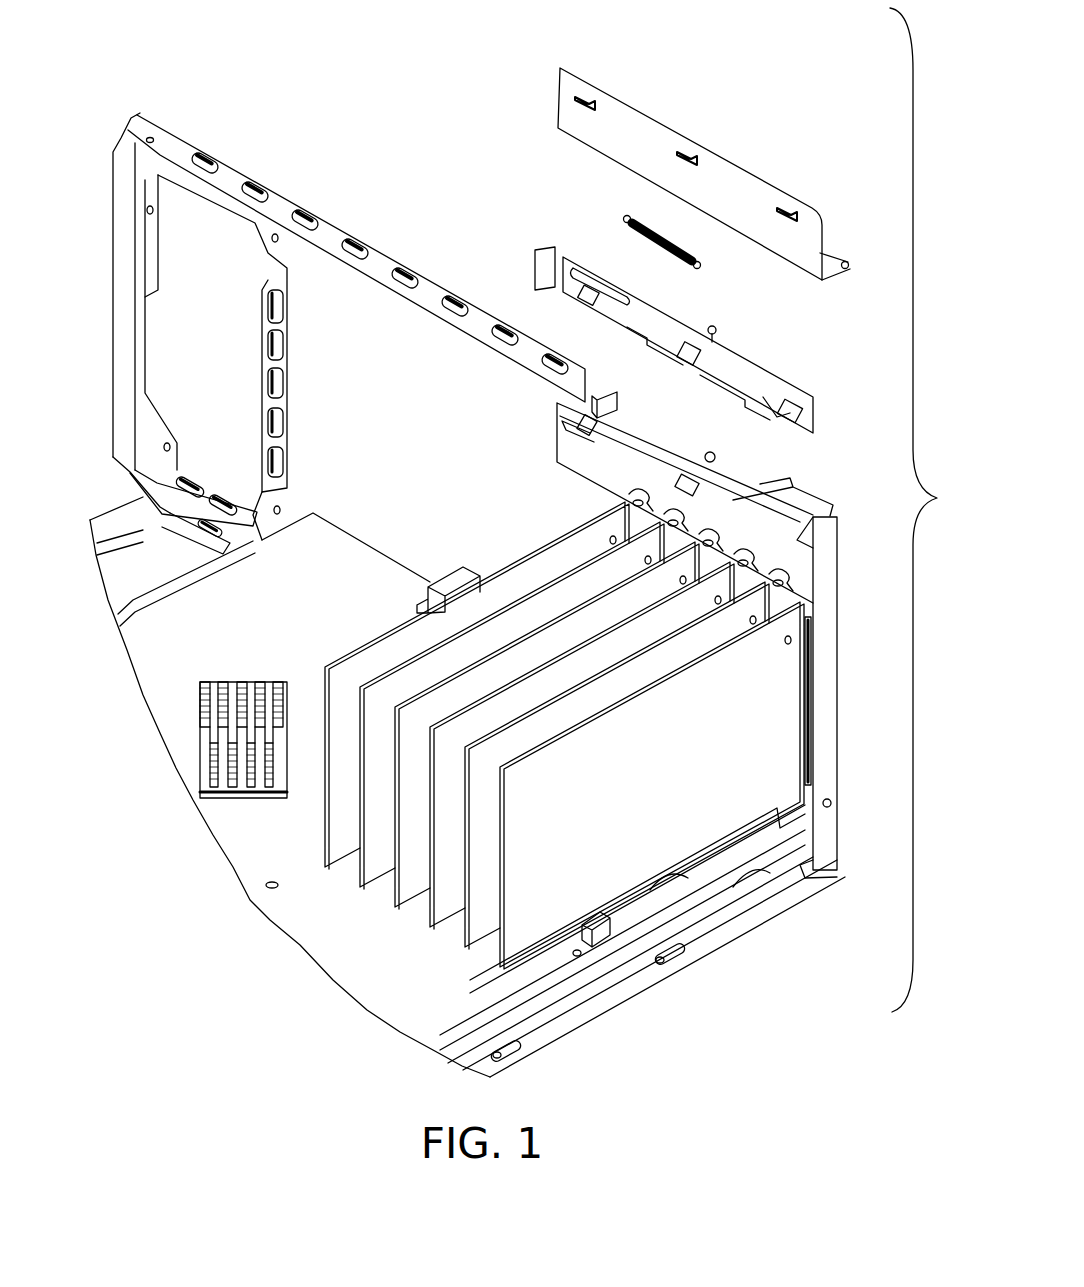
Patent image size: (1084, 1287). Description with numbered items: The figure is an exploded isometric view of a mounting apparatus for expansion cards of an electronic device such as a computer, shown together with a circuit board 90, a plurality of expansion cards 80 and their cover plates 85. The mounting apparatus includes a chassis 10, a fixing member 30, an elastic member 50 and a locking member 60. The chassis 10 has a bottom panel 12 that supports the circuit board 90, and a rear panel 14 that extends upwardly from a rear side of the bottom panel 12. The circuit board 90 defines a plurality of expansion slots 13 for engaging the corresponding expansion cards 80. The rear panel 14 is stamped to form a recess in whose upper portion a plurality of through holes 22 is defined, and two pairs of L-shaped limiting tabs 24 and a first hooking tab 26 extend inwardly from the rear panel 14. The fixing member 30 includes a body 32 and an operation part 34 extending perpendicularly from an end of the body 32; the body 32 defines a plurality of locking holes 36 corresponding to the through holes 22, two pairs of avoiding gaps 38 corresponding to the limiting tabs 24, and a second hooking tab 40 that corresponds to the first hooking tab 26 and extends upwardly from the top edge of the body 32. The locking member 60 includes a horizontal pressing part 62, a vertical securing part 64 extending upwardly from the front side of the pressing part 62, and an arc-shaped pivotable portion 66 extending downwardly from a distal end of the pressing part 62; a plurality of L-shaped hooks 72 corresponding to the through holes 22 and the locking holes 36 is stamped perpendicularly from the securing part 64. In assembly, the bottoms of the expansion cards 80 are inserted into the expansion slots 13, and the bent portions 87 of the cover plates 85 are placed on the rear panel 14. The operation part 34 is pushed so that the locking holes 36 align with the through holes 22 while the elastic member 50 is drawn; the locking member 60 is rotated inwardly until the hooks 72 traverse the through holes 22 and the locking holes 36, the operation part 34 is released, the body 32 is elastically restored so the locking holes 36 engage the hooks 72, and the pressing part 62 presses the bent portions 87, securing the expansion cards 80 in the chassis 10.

The chassis 10 is at (214, 144).
The bottom panel 12 is at (132, 577).
The expansion slots 13 is at (610, 910).
The rear panel 14 is at (147, 178).
The through holes 22 is at (585, 417).
The limiting tabs 24 is at (748, 535).
The first hooking tab 26 is at (630, 412).
The fixing member 30 is at (683, 325).
The body 32 is at (737, 377).
The operation part 34 is at (545, 252).
The locking holes 36 is at (685, 345).
The avoiding gaps 38 is at (773, 372).
The second hooking tab 40 is at (717, 332).
The elastic member 50 is at (676, 240).
The locking member 60 is at (726, 182).
The pressing part 62 is at (828, 273).
The securing part 64 is at (658, 137).
The pivotable portion 66 is at (849, 267).
The hooks 72 is at (582, 93).
The expansion cards 80 is at (530, 923).
The cover plates 85 is at (805, 638).
The bent portions 87 is at (806, 588).
The circuit board 90 is at (370, 938).